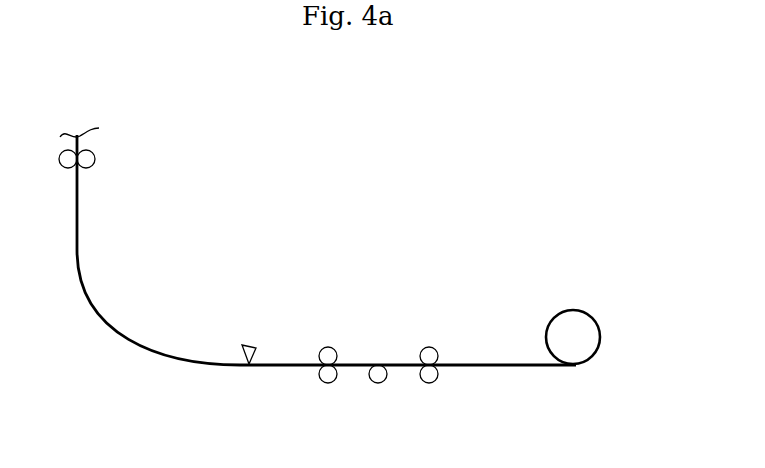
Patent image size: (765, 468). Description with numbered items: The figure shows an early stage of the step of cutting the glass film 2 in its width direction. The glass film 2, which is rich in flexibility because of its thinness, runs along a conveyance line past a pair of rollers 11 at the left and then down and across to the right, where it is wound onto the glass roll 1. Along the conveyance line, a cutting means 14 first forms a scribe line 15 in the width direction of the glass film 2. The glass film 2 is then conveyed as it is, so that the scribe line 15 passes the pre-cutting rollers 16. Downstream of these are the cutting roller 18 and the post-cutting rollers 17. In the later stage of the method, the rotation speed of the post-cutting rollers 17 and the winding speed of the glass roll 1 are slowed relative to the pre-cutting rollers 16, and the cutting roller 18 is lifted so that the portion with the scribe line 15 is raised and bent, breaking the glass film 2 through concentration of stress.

The glass roll 1 is at (577, 335).
The glass film 2 is at (87, 283).
The pair of guide rollers 11 is at (95, 150).
The cutting means 14 is at (252, 345).
The scribe line 15 is at (341, 366).
The pre-cutting rollers 16 is at (327, 383).
The post-cutting rollers 17 is at (427, 383).
The cutting roller 18 is at (375, 383).